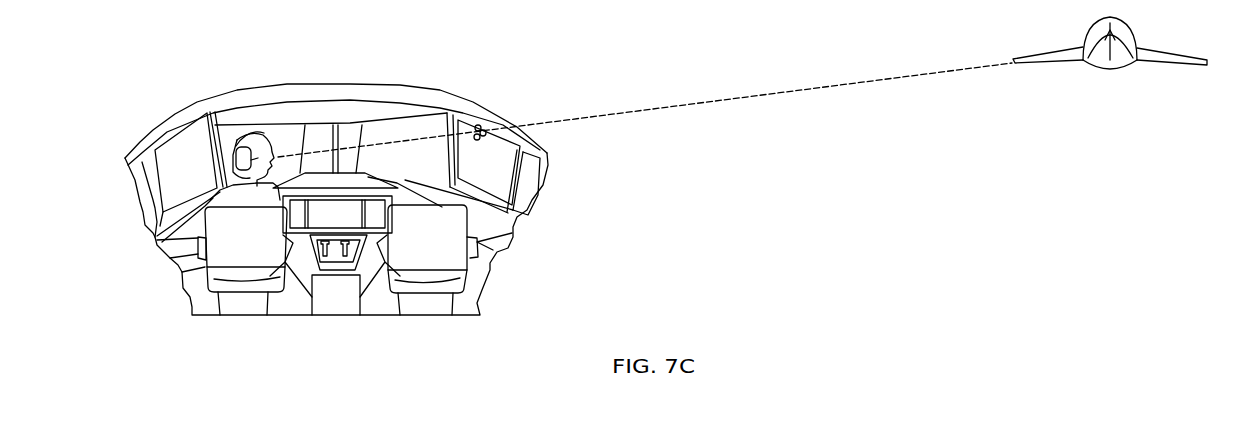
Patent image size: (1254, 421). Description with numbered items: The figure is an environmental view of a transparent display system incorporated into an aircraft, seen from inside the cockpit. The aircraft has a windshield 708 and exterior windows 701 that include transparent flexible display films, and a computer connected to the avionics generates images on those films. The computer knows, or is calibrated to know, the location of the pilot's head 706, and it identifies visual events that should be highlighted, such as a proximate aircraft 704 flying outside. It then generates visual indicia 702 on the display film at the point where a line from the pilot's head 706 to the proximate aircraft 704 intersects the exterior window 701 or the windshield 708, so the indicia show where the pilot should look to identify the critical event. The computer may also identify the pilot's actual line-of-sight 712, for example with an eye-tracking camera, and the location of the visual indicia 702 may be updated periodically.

The exterior window 701 is at (502, 203).
The visual indicia 702 is at (477, 127).
The proximate aircraft 704 is at (1085, 63).
The pilot's head 706 is at (233, 155).
The windshield 708 is at (350, 133).
The pilot's actual line-of-sight 712 is at (590, 117).